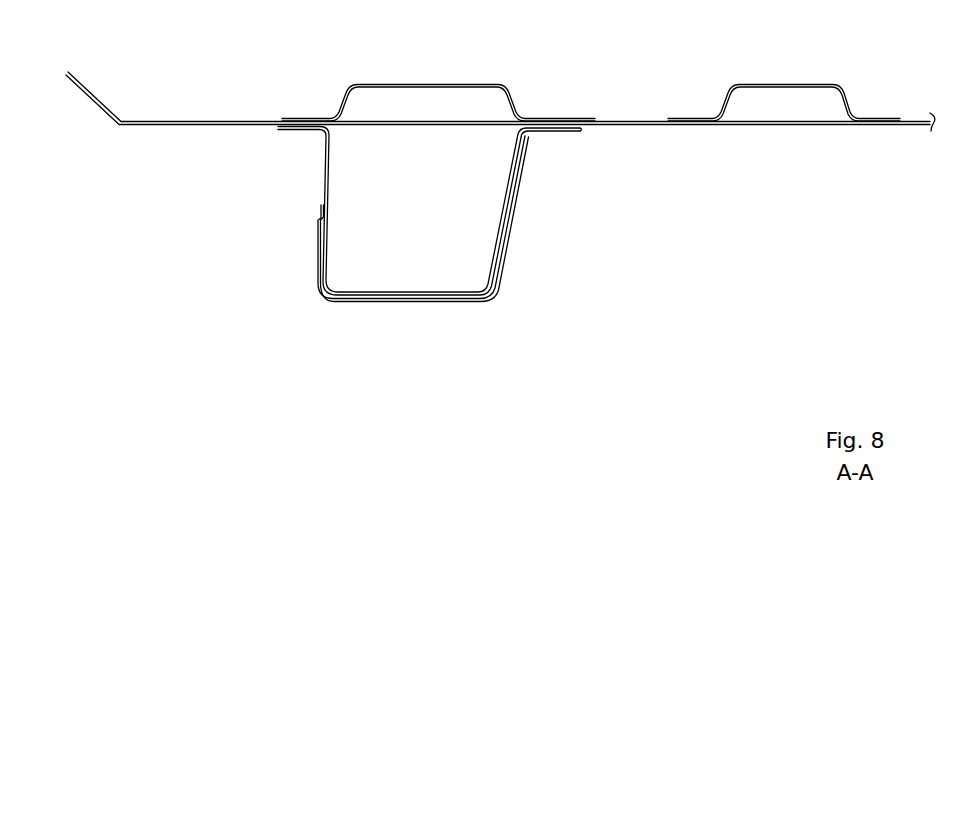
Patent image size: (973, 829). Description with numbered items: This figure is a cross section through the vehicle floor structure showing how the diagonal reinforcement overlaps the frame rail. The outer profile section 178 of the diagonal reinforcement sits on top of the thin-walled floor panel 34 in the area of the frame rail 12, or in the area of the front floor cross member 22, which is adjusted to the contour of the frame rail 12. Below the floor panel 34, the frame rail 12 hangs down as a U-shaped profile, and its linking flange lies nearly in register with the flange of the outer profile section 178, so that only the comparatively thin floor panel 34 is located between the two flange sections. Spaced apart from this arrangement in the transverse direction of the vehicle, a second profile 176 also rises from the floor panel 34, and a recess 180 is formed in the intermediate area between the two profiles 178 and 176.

The floor panel 34 is at (213, 121).
The outer profile section 178 is at (382, 85).
The profile 176 is at (767, 85).
The recess 180 is at (631, 99).
The front frame rail 12 is at (326, 165).
The front floor cross member 22 is at (318, 246).